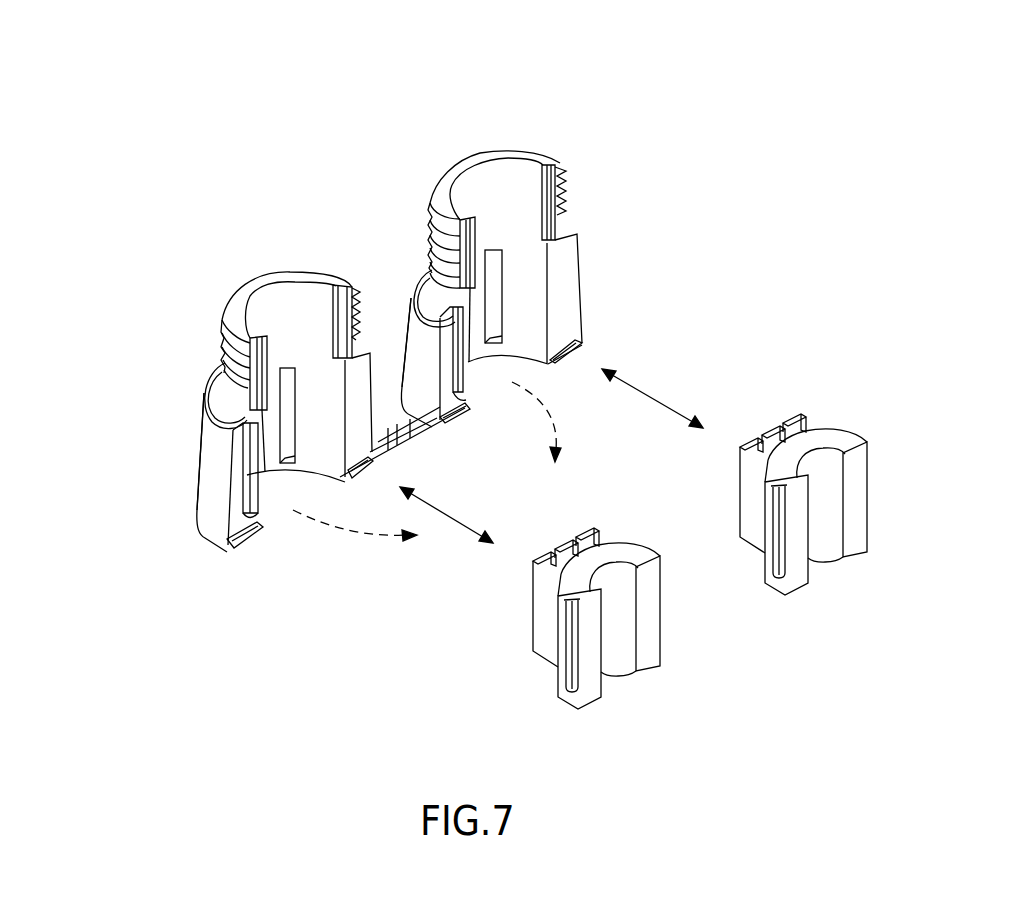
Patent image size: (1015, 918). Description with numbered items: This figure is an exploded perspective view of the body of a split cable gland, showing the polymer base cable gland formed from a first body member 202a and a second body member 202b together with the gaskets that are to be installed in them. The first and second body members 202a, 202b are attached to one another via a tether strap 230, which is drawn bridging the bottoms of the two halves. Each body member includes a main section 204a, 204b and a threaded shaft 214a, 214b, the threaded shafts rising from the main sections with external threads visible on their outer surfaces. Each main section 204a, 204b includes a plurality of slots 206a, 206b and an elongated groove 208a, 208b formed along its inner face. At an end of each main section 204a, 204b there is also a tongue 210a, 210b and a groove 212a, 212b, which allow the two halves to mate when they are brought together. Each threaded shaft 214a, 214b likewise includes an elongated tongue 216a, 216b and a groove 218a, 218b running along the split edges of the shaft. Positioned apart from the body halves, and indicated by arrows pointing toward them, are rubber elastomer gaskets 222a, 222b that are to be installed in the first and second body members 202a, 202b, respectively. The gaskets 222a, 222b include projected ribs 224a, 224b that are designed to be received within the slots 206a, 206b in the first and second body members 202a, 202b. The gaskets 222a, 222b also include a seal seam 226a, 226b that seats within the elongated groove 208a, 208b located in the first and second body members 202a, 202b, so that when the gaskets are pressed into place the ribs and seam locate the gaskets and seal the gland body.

The first body member 202a is at (197, 483).
The second body member 202b is at (582, 312).
The main section 204a is at (215, 448).
The main section 204b is at (565, 290).
The slots 206a is at (288, 440).
The slots 206b is at (493, 278).
The elongated groove 208a is at (242, 515).
The elongated groove 208b is at (388, 446).
The tongue 210a is at (242, 540).
The tongue 210b is at (460, 423).
The groove 212a is at (360, 473).
The groove 212b is at (580, 346).
The threaded shaft 214a is at (228, 328).
The threaded shaft 214b is at (506, 152).
The elongated tongue 216a is at (258, 388).
The elongated tongue 216b is at (466, 222).
The groove 218a is at (343, 315).
The groove 218b is at (549, 172).
The gasket 222a is at (660, 633).
The gasket 222b is at (867, 517).
The projected ribs 224a is at (545, 640).
The projected ribs 224b is at (793, 423).
The seal seam 226a is at (572, 675).
The seal seam 226b is at (778, 557).
The tether strap 230 is at (438, 422).